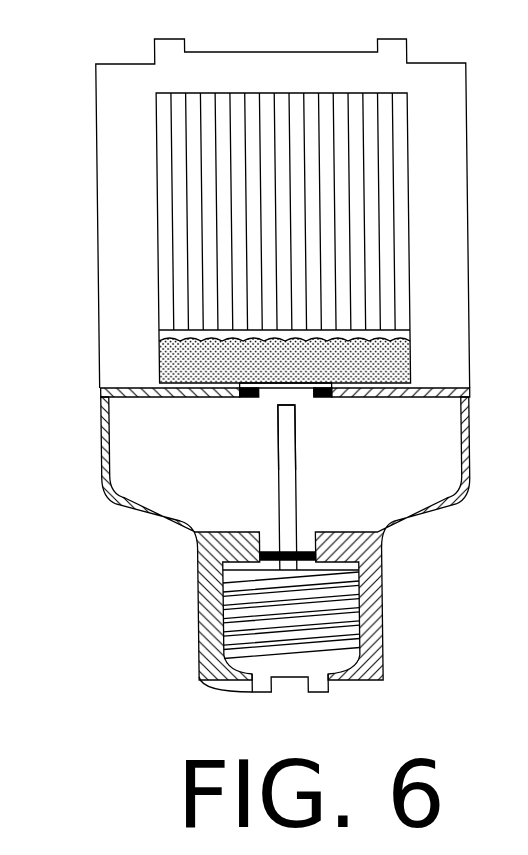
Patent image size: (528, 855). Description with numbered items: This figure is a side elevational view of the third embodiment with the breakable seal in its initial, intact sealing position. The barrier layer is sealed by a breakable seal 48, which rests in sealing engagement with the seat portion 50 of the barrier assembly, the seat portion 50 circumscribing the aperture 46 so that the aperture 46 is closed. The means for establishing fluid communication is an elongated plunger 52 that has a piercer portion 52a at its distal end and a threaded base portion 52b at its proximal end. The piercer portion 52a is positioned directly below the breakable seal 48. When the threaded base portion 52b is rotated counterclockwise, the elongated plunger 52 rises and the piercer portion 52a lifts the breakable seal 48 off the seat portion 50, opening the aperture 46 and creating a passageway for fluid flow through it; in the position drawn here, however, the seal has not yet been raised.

The aperture 46 is at (267, 402).
The breakable seal 48 is at (245, 383).
The seat portion 50 is at (326, 398).
The elongated plunger 52 is at (286, 478).
The piercer portion 52a is at (271, 458).
The threaded base portion 52b is at (355, 624).